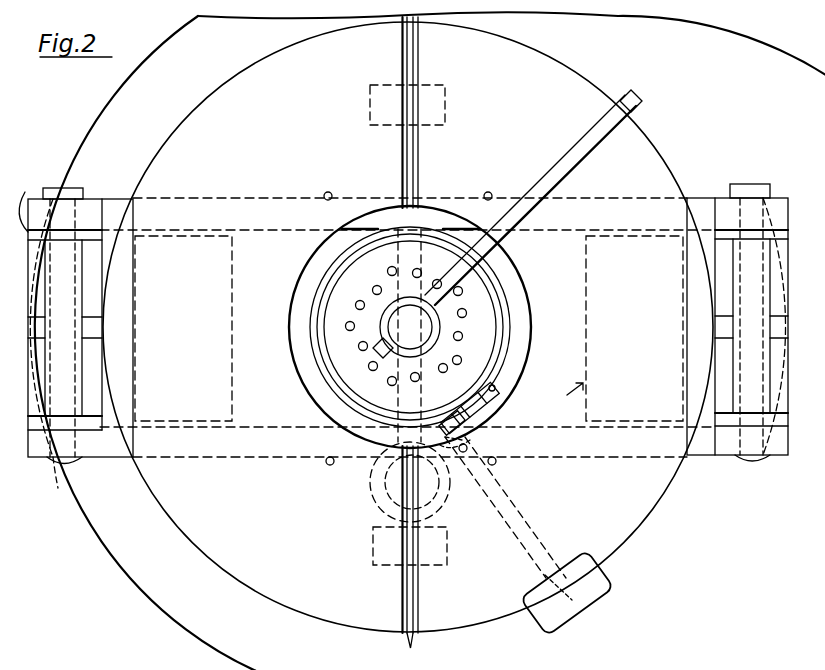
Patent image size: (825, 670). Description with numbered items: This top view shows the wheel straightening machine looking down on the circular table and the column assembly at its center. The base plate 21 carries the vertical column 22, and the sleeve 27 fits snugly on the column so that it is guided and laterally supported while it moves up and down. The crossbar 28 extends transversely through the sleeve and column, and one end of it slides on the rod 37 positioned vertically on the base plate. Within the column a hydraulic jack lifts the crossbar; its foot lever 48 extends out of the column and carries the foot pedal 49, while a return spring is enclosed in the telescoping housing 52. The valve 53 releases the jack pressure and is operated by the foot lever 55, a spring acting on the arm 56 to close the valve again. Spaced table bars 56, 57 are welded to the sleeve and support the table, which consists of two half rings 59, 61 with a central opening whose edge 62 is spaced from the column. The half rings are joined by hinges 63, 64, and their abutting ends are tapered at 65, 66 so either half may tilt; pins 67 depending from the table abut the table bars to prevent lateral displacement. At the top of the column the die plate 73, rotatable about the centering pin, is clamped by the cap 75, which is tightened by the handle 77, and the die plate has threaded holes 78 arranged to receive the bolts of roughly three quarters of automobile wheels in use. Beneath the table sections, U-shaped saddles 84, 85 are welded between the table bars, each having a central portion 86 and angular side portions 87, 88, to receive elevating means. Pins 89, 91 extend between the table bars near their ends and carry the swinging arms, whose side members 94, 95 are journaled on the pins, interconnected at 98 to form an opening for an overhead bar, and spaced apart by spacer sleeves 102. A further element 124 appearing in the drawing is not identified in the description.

The base plate 21 is at (326, 341).
The outer ring lower portion 124 is at (616, 343).
The column 22 is at (325, 355).
The sleeve 27 is at (507, 348).
The crossbar 28 is at (390, 252).
The rod 37 is at (378, 497).
The foot lever 48 is at (525, 517).
The foot pedal 49 is at (605, 581).
The telescoping housing 52 is at (480, 446).
The valve 53 is at (483, 428).
The foot lever 55 is at (433, 509).
The table bar 56 is at (497, 388).
The table bar 57 is at (107, 448).
The half ring 59 is at (408, 327).
The half ring 61 is at (410, 286).
The edge of central opening 62 is at (520, 297).
The hinge 63 is at (431, 88).
The hinge 64 is at (436, 564).
The tapered end 65 is at (414, 43).
The tapered end 66 is at (408, 558).
The pins 67 is at (491, 191).
The die plate 73 is at (410, 361).
The cap 75 is at (440, 330).
The handle 77 is at (565, 160).
The threaded holes 78 is at (371, 290).
The saddle 84 is at (499, 407).
The saddle 85 is at (240, 410).
The central portion 86 is at (665, 375).
The side portion 87 is at (640, 224).
The side portion 88 is at (622, 432).
The pin 89 is at (777, 203).
The pin 91 is at (43, 479).
The side member 94 is at (34, 312).
The side member 95 is at (95, 420).
The interconnection of side members 98 is at (100, 320).
The spacer sleeve 102 is at (73, 346).